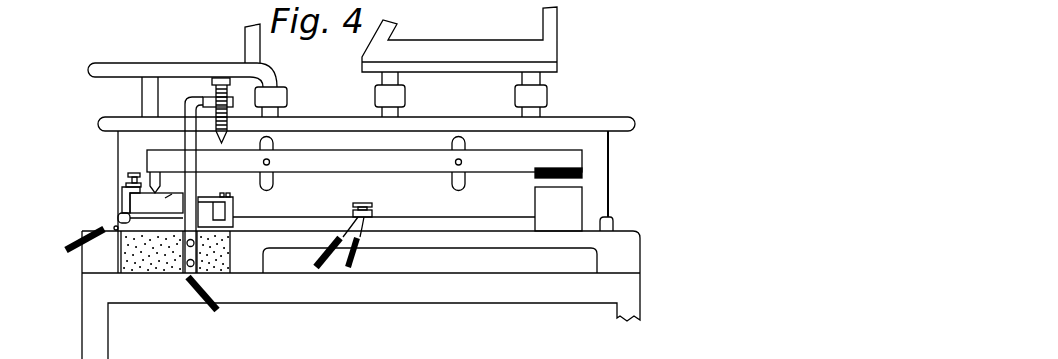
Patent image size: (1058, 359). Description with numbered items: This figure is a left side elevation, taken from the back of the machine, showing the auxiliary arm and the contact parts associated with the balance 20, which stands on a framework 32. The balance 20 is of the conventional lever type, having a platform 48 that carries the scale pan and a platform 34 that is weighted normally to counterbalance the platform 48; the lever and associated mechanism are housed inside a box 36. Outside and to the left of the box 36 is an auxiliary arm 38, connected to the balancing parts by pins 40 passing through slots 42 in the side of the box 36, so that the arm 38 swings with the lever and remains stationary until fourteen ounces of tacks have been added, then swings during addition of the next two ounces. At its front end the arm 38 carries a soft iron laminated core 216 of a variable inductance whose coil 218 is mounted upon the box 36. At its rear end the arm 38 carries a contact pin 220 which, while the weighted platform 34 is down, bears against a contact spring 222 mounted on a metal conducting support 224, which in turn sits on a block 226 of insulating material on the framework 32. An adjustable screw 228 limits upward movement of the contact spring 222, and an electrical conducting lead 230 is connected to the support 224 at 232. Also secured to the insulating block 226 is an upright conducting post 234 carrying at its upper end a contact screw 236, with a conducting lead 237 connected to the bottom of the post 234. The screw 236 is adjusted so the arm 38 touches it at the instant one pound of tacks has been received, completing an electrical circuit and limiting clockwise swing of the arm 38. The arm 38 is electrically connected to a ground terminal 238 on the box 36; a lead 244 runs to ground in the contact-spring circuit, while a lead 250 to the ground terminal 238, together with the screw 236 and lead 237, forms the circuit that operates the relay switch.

The balance 20 is at (655, 196).
The framework 32 is at (466, 311).
The platform 34 is at (98, 63).
The box 36 is at (598, 145).
The auxiliary arm 38 is at (333, 158).
The pins 40 is at (268, 165).
The slots 42 is at (268, 190).
The platform 48 is at (557, 69).
The soft iron laminated core 216 is at (582, 173).
The coil 218 is at (573, 207).
The contact pin 220 is at (152, 172).
The contact spring 222 is at (181, 210).
The metal conducting support 224 is at (148, 227).
The block of insulating material 226 is at (162, 268).
The adjustable screw 228 is at (131, 173).
The electrical conducting lead 230 is at (110, 228).
The connection point 232 is at (118, 213).
The upright conducting post 234 is at (196, 98).
The contact screw 236 is at (222, 78).
The conducting lead 237 is at (212, 294).
The ground terminal 238 is at (362, 202).
The lead 244 is at (315, 260).
The lead 250 is at (360, 262).